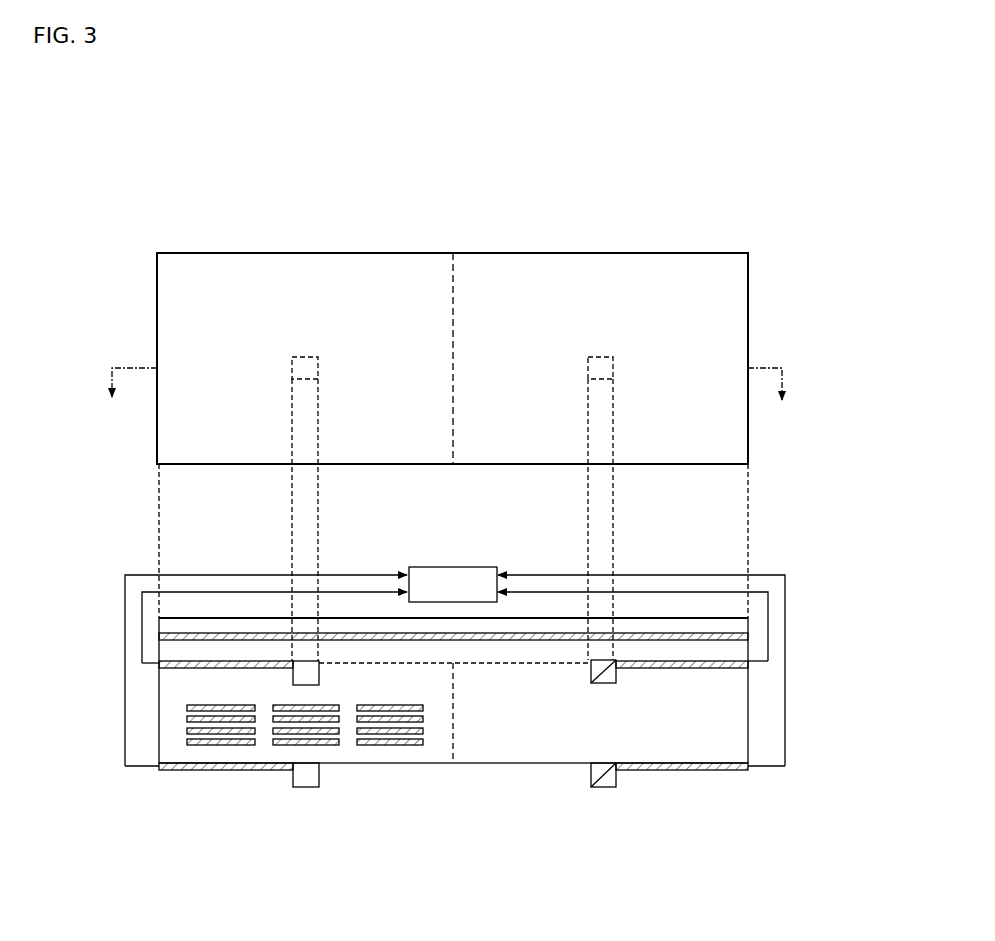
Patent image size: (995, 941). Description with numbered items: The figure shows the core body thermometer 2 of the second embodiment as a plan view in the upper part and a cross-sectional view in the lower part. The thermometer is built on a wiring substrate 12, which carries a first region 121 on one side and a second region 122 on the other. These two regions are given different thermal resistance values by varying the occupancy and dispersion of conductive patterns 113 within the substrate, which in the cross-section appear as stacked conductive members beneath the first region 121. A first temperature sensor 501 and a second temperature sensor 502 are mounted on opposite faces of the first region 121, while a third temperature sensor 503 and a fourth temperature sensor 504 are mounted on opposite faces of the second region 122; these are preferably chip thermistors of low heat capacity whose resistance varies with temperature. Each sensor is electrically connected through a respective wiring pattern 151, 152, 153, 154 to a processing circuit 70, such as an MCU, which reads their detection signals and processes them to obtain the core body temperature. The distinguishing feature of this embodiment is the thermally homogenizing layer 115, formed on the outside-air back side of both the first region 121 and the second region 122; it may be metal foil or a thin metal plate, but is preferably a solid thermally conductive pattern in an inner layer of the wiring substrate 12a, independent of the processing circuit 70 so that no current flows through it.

The core body thermometer 2 is at (560, 200).
The wiring substrate 12 is at (410, 846).
The wiring substrate 12a is at (480, 657).
The first region 121 is at (415, 778).
The second region 122 is at (525, 778).
The conductive pattern 113 is at (399, 710).
The thermally homogenizing layer 115 is at (556, 664).
The processing circuit 70 is at (452, 567).
The wiring pattern 151 is at (174, 771).
The wiring pattern 152 is at (228, 661).
The wiring pattern 153 is at (687, 771).
The wiring pattern 154 is at (699, 661).
The first temperature sensor 501 is at (303, 788).
The second temperature sensor 502 is at (308, 661).
The third temperature sensor 503 is at (603, 788).
The fourth temperature sensor 504 is at (603, 660).